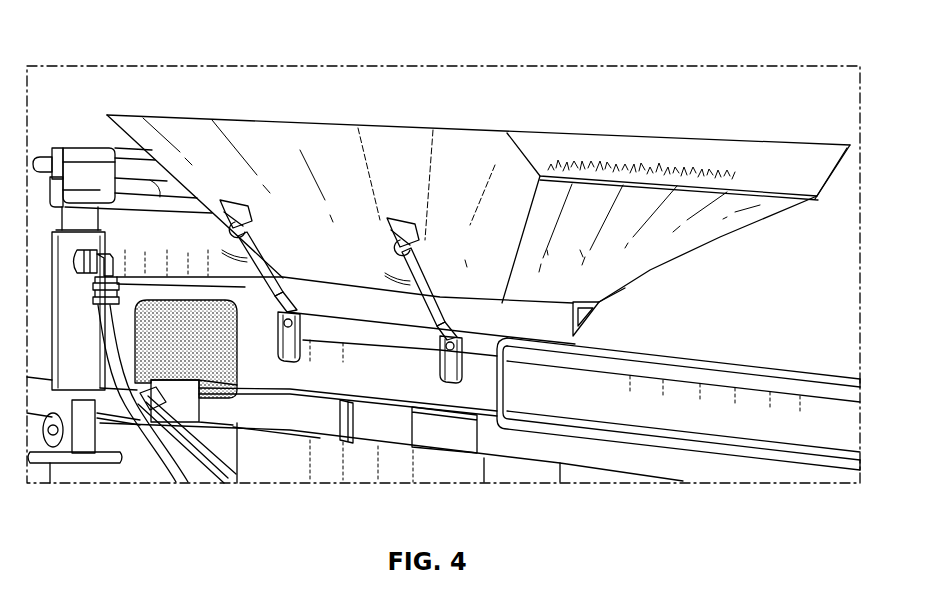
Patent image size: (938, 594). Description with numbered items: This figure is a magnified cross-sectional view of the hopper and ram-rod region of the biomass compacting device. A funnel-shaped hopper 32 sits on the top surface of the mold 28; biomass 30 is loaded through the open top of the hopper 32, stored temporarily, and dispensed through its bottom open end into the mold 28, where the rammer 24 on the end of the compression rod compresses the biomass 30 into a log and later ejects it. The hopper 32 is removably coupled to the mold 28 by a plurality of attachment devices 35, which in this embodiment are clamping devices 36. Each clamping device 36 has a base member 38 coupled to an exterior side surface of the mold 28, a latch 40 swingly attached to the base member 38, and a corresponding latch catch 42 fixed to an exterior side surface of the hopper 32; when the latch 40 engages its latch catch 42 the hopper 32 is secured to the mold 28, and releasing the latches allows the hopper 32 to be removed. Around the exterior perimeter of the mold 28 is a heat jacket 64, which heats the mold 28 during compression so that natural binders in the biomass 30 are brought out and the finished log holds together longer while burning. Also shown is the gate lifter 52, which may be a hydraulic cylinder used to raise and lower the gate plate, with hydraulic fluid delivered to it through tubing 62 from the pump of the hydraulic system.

The rammer 24 is at (697, 370).
The mold 28 is at (594, 352).
The biomass 30 is at (678, 168).
The hopper 32 is at (258, 166).
The attachment devices 35 is at (266, 205).
The clamping device 36 is at (428, 266).
The base member 38 is at (447, 367).
The latch 40 is at (412, 278).
The latch catch 42 is at (390, 217).
The gate lifter 52 is at (85, 312).
The tubing 62 is at (176, 476).
The heat jacket 64 is at (221, 347).